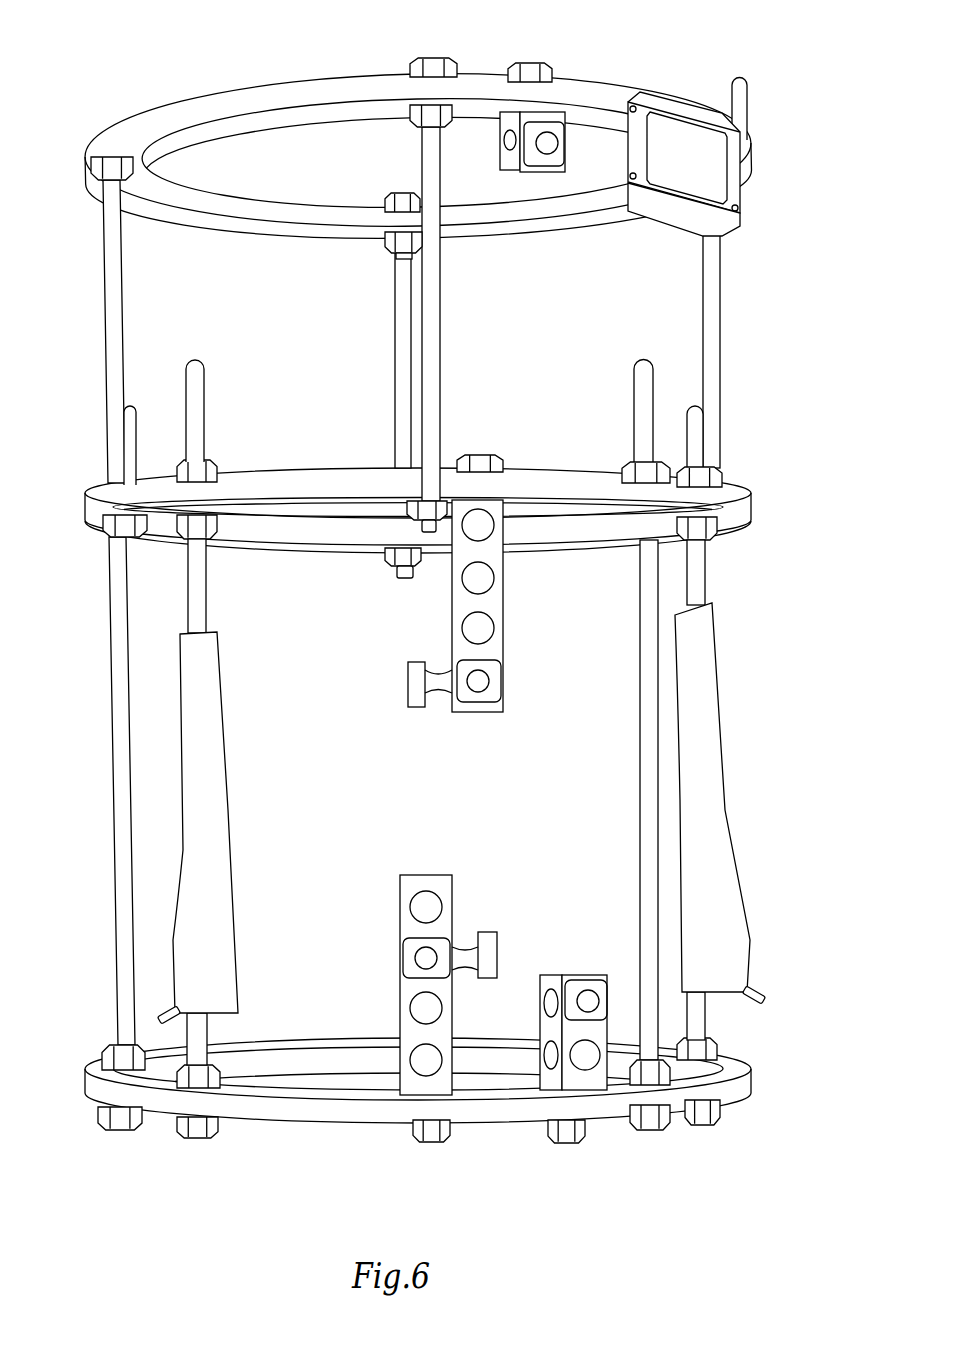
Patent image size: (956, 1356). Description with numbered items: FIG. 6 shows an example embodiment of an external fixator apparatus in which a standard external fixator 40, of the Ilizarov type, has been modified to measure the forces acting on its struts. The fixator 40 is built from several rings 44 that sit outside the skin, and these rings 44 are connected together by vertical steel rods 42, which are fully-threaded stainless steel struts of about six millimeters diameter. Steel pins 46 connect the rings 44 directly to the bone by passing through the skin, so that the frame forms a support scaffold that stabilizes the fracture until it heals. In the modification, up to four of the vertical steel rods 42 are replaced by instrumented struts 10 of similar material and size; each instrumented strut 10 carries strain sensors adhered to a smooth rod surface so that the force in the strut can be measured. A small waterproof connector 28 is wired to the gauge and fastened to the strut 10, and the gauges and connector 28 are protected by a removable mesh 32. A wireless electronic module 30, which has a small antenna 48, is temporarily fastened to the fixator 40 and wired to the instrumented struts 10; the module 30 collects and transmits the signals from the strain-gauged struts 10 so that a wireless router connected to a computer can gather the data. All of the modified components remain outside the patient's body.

The instrumented strut 10 is at (712, 574).
The waterproof connector 28 is at (165, 1010).
The wireless electronic module 30 is at (713, 147).
The removable mesh 32 is at (213, 757).
The external fixator 40 is at (165, 47).
The vertical steel rod 42 is at (118, 291).
The ring 44 is at (140, 112).
The steel pin 46 is at (492, 716).
The antenna 48 is at (743, 102).